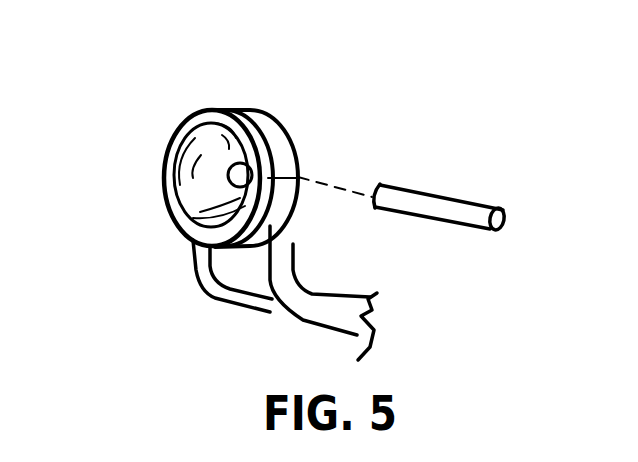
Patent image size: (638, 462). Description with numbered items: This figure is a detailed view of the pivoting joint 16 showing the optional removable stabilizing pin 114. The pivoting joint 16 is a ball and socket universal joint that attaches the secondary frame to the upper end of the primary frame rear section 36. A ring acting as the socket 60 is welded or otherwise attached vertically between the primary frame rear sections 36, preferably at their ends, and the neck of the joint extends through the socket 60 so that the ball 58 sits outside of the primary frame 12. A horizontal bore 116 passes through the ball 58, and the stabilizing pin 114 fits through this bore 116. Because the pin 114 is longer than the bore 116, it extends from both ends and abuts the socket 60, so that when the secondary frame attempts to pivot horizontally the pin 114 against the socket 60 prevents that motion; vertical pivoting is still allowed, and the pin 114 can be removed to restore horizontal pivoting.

The primary frame 12 is at (248, 300).
The pivoting joint 16 is at (218, 206).
The primary frame rear section 36 is at (193, 252).
The ball 58 is at (163, 142).
The socket 60 is at (287, 123).
The stabilizing pin 114 is at (463, 197).
The horizontal bore 116 is at (228, 178).